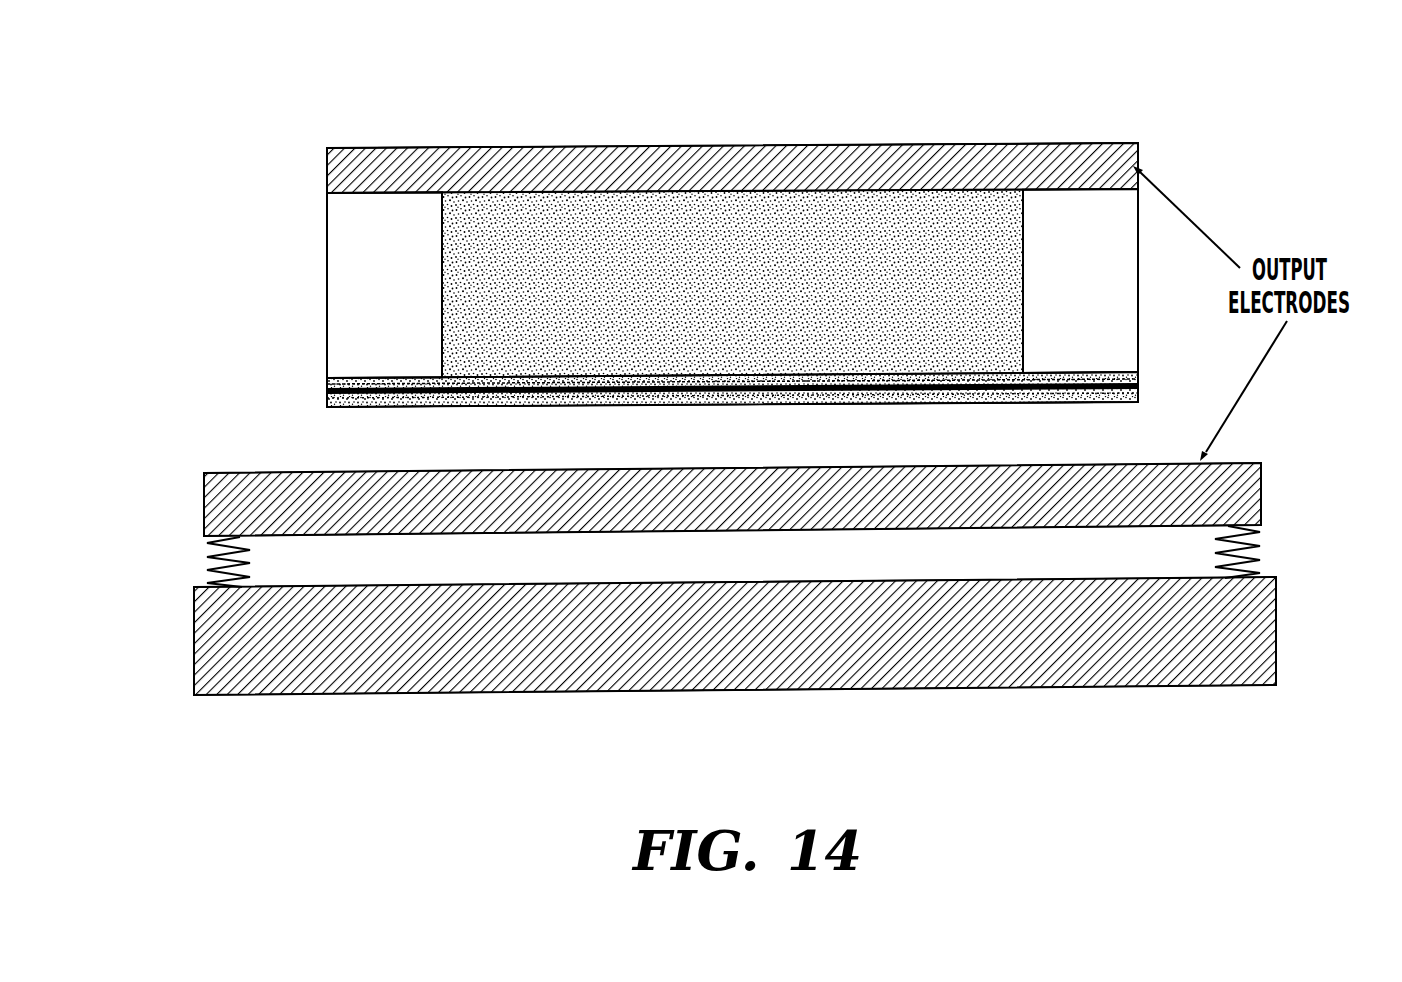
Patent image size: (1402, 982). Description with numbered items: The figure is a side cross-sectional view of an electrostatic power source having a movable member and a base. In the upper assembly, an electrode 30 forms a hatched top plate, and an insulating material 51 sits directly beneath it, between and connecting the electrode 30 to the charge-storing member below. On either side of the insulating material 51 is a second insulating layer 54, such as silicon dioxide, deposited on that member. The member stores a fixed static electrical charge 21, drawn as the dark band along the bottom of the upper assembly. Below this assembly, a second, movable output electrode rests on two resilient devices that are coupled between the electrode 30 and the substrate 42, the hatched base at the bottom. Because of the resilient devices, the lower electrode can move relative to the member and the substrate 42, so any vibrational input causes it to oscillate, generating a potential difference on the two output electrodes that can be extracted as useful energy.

The electrode 30 is at (1088, 152).
The insulating material 51 is at (852, 210).
The second insulating layer 54 is at (345, 287).
The fixed static electrical charge 21 is at (330, 390).
The substrate 42 is at (1090, 667).